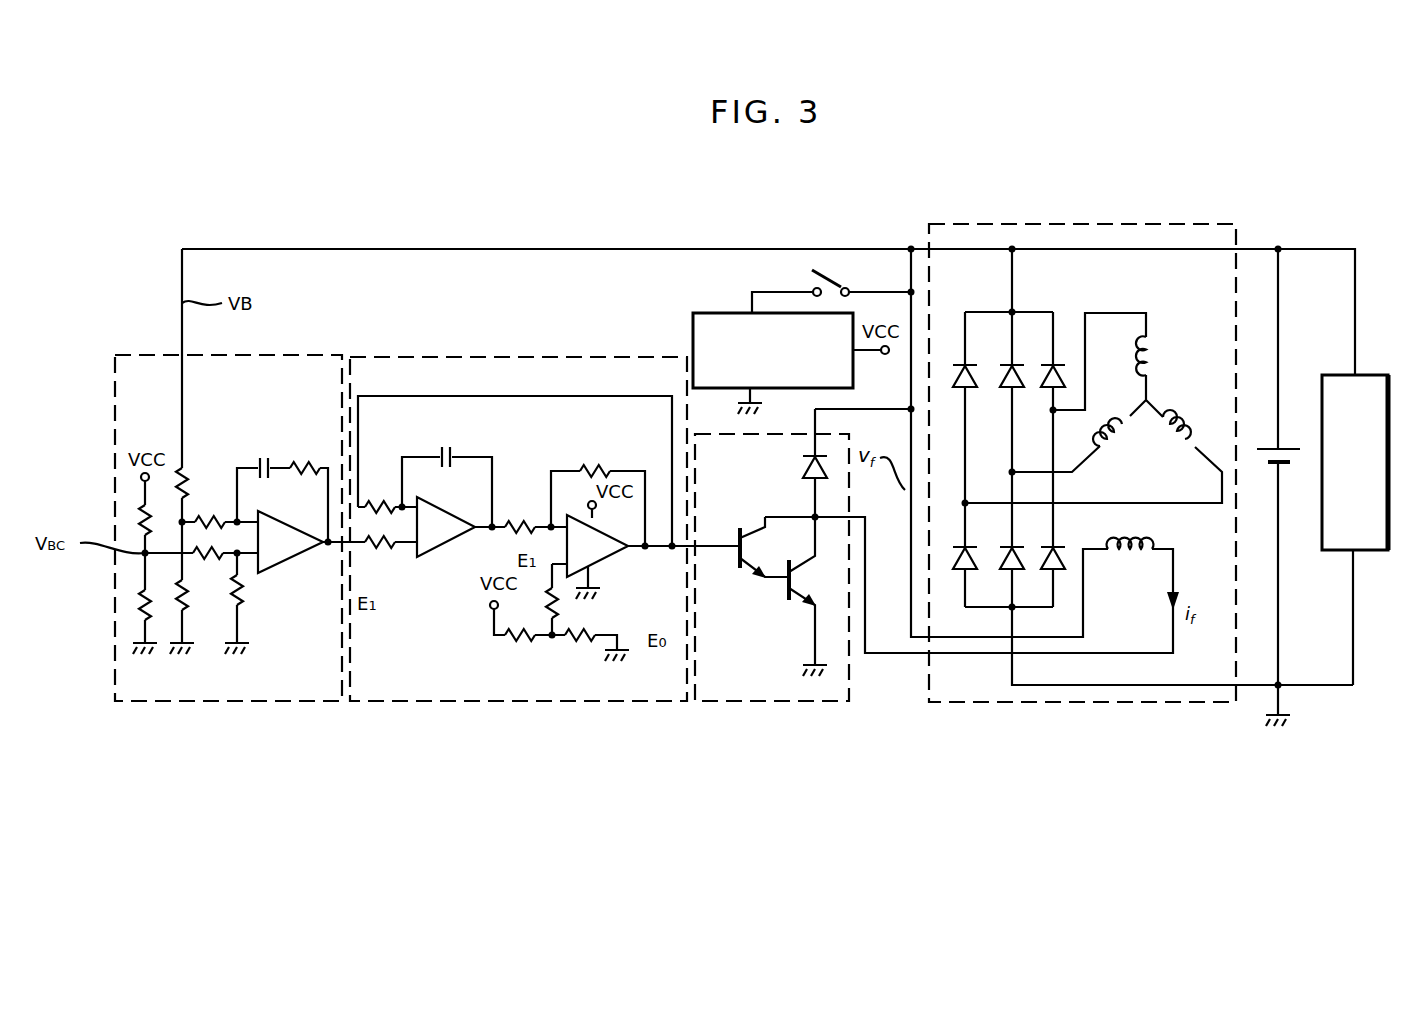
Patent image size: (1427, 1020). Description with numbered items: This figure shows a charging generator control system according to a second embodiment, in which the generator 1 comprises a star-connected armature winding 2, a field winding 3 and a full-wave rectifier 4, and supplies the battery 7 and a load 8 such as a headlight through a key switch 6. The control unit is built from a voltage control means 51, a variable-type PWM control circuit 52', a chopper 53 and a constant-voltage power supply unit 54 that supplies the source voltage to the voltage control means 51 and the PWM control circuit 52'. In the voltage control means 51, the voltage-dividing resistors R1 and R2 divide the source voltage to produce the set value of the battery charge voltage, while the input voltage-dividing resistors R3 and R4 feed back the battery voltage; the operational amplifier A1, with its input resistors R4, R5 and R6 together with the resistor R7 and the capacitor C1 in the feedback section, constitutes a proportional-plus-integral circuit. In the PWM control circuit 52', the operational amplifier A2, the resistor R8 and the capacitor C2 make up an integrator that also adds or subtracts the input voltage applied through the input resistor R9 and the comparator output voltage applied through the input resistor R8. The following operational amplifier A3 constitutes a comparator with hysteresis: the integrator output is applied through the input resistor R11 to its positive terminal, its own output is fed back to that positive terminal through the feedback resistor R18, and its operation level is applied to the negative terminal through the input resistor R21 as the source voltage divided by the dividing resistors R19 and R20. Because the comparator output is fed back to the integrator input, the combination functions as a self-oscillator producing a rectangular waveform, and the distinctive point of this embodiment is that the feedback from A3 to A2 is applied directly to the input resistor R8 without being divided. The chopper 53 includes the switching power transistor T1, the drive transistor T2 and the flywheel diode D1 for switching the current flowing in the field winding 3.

The generator 1 is at (1027, 703).
The armature winding 2 is at (1150, 396).
The field winding 3 is at (1132, 530).
The full-wave rectifier 4 is at (993, 327).
The key switch 6 is at (835, 277).
The battery 7 is at (1290, 444).
The load 8 is at (1372, 375).
The voltage control means 51 is at (218, 703).
The PWM control circuit of variable type 52' is at (518, 570).
The chopper 53 is at (762, 703).
The constant-voltage power supply unit 54 is at (722, 313).
The voltage-dividing resistor R1 is at (140, 520).
The voltage-dividing resistor R2 is at (140, 606).
The input voltage-dividing resistor R3 is at (186, 470).
The input voltage-dividing resistor R4 is at (188, 608).
The input resistor R5 is at (212, 560).
The input resistor R6 is at (243, 597).
The resistor R7 is at (308, 462).
The input resistor R8 is at (378, 500).
The input resistor R9 is at (382, 552).
The input resistor R11 is at (520, 521).
The feedback resistor R18 is at (596, 466).
The dividing resistor R19 is at (522, 645).
The dividing resistor R20 is at (580, 645).
The input resistor R21 is at (558, 604).
The capacitor C1 is at (264, 456).
The capacitor C2 is at (446, 445).
The operational amplifier A1 is at (295, 560).
The operational amplifier A2 is at (440, 552).
The operational amplifier A3 is at (608, 560).
The flywheel diode D1 is at (802, 474).
The switching power transistor T1 is at (790, 590).
The drive transistor T2 is at (736, 560).